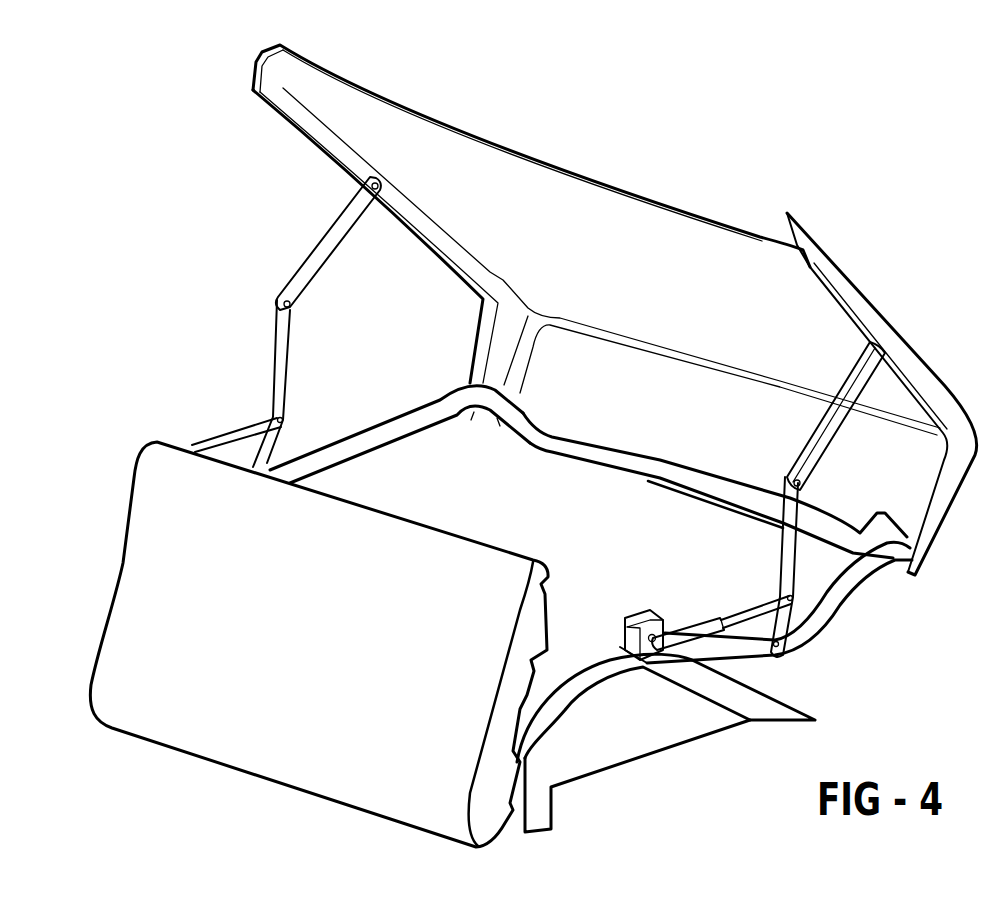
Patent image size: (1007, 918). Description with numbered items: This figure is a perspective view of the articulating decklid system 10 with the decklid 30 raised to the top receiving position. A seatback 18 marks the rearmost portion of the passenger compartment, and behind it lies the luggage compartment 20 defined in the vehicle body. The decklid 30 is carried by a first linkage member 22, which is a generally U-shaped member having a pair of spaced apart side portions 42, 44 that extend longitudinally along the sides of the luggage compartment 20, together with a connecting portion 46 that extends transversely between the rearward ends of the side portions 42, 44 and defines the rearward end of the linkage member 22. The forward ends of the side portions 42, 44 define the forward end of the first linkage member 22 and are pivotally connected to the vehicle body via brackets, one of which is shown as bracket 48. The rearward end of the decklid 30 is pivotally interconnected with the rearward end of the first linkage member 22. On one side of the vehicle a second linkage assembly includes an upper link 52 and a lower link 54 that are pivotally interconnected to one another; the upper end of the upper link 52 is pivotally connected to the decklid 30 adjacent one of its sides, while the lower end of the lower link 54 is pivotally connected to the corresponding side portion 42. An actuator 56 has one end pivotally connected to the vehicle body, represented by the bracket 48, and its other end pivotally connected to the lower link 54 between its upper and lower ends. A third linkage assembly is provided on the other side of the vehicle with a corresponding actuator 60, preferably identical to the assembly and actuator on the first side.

The articulating decklid system 10 is at (615, 310).
The seatback 18 is at (289, 627).
The luggage compartment 20 is at (496, 495).
The first linkage member 22 is at (588, 444).
The decklid 30 is at (548, 162).
The side portion 42 is at (797, 630).
The side portion 44 is at (367, 442).
The connecting portion 46 is at (655, 483).
The bracket 48 is at (640, 612).
The upper link 52 is at (256, 313).
The lower link 54 is at (793, 563).
The actuator 56 is at (690, 628).
The actuator 60 is at (238, 432).